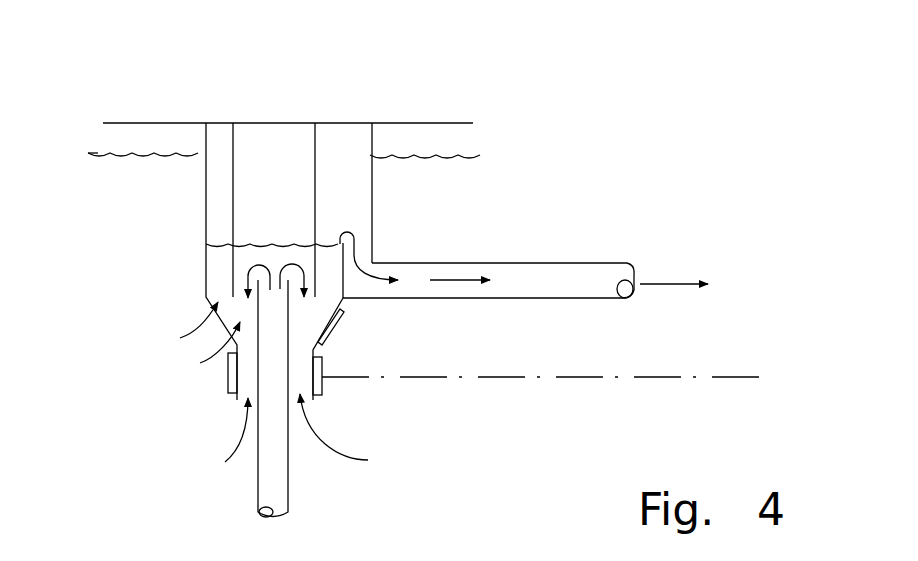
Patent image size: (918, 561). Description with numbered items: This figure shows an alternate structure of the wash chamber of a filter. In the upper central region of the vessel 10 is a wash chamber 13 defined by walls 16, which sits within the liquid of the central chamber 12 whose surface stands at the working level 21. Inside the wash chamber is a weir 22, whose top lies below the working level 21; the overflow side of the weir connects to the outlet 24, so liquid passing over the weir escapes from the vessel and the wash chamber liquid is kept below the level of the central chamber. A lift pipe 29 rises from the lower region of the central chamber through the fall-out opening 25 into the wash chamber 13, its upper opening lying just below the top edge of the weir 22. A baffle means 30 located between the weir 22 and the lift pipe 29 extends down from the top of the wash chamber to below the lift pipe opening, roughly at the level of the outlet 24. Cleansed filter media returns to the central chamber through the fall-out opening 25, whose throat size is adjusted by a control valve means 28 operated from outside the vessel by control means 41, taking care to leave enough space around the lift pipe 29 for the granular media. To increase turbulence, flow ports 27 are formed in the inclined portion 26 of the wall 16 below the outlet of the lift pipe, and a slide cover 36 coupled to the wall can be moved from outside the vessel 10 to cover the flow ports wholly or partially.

The vessel 10 is at (404, 123).
The central chamber 12 is at (148, 243).
The wash chamber 13 is at (290, 192).
The walls 16 is at (206, 185).
The working level 21 is at (127, 153).
The weir 22 is at (343, 262).
The outlet 24 is at (640, 272).
The fall-out opening 25 is at (238, 402).
The inclined portion 26 is at (200, 363).
The flow ports 27 is at (207, 325).
The control valve means 28 is at (230, 387).
The lift pipe 29 is at (290, 485).
The baffle means 30 is at (317, 157).
The slide cover 36 is at (323, 340).
The control means 41 is at (633, 378).